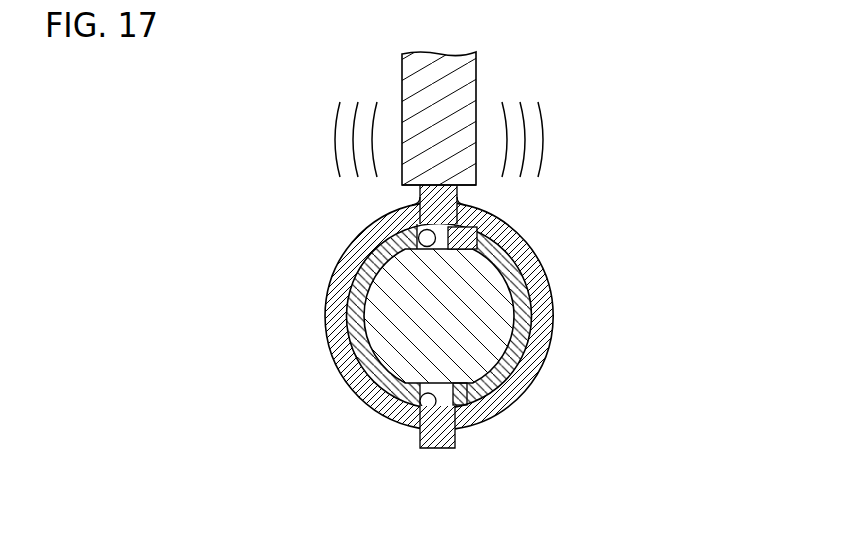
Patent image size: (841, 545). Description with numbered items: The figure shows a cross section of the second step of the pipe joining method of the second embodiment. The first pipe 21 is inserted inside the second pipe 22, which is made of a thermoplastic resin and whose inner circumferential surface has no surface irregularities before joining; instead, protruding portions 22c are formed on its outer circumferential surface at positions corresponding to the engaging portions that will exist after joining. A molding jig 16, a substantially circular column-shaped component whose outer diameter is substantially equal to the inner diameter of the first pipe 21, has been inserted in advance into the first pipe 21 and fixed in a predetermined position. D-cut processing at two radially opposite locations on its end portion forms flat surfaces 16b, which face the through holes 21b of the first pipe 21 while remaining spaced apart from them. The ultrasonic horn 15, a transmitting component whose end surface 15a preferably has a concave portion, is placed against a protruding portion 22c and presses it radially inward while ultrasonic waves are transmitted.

The ultrasonic horn 15 is at (476, 70).
The end surface 15a is at (457, 201).
The molding jig 16 is at (505, 318).
The flat surfaces 16b is at (455, 407).
The first pipe 21 is at (352, 338).
The through holes 21b is at (430, 406).
The second pipe 22 is at (350, 388).
The protruding portions 22c is at (440, 448).